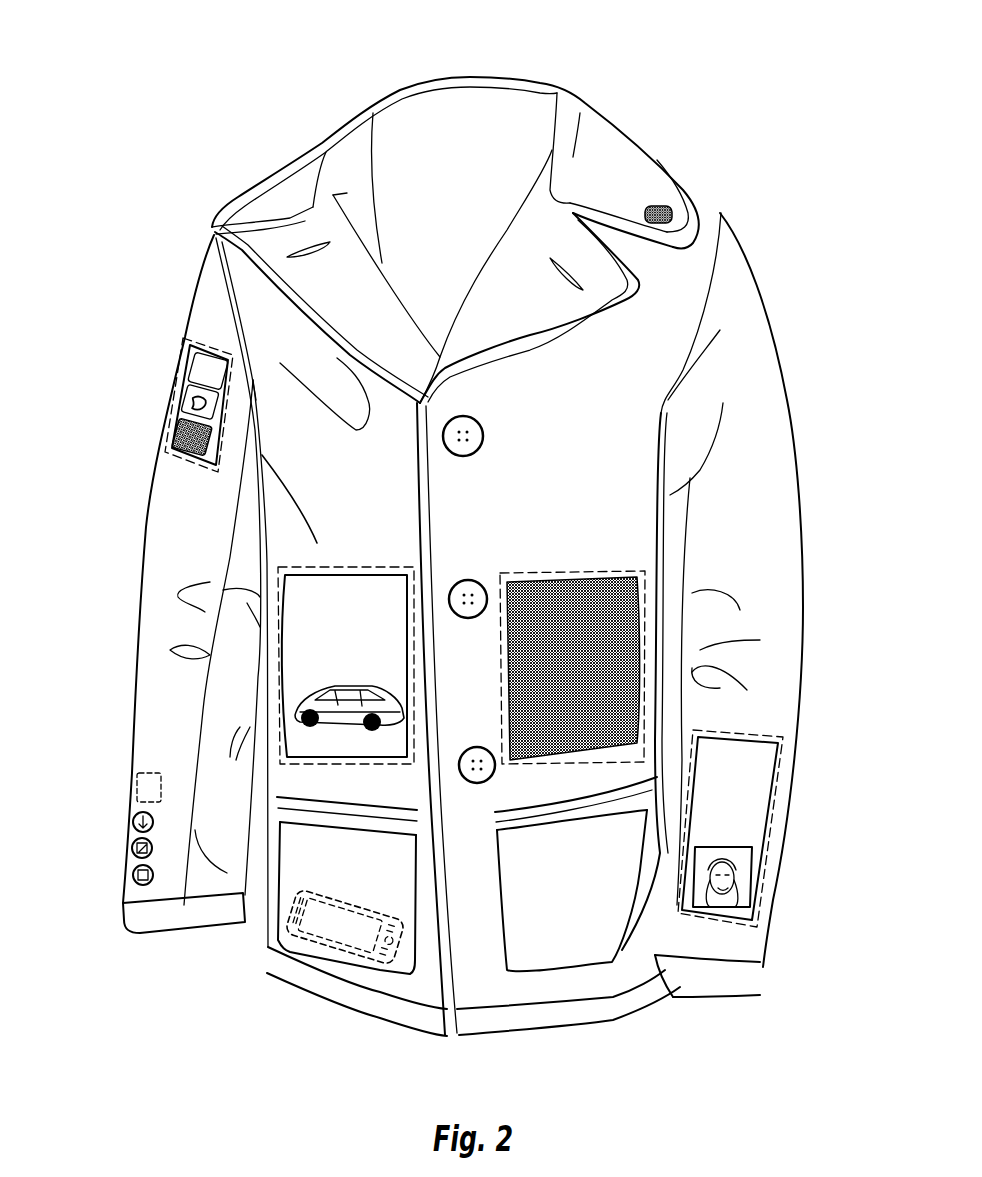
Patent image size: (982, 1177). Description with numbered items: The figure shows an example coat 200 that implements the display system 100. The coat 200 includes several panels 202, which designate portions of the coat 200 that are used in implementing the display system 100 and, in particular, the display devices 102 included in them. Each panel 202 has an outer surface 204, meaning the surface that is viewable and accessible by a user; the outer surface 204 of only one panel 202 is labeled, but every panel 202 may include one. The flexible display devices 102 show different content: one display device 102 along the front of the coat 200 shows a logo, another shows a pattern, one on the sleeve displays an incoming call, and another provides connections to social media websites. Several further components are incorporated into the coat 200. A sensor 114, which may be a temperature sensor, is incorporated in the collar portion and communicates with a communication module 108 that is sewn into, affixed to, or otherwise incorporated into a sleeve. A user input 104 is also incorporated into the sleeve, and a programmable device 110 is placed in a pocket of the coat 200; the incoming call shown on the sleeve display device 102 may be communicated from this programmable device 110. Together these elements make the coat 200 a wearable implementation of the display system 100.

The coat 200 is at (141, 60).
The display system 100 is at (148, 322).
The display device 102 is at (172, 422).
The panel 202 is at (183, 463).
The outer surface 204 is at (280, 583).
The communication module 108 is at (137, 786).
The user input 104 is at (132, 873).
The programmable device 110 is at (323, 947).
The sensor 114 is at (676, 220).